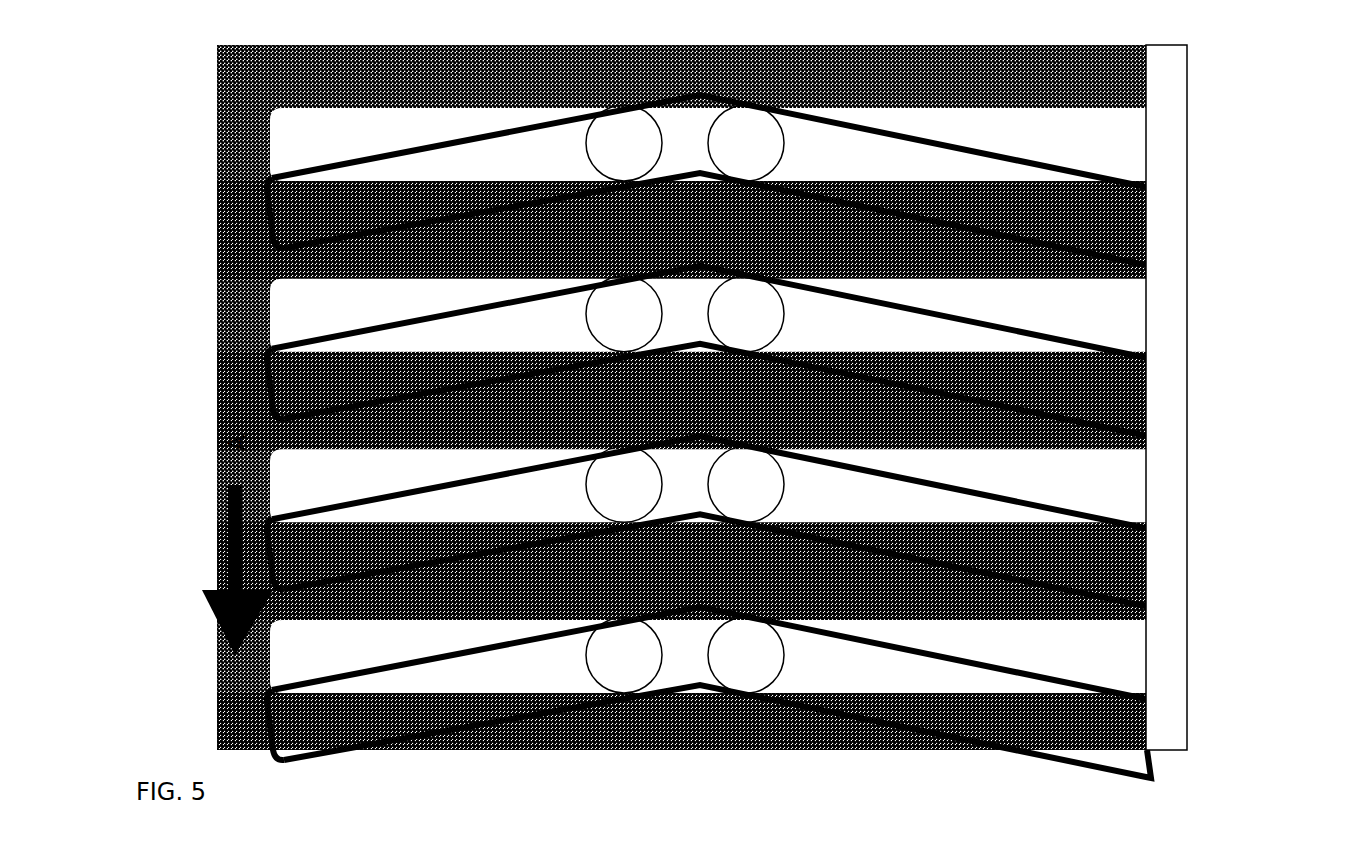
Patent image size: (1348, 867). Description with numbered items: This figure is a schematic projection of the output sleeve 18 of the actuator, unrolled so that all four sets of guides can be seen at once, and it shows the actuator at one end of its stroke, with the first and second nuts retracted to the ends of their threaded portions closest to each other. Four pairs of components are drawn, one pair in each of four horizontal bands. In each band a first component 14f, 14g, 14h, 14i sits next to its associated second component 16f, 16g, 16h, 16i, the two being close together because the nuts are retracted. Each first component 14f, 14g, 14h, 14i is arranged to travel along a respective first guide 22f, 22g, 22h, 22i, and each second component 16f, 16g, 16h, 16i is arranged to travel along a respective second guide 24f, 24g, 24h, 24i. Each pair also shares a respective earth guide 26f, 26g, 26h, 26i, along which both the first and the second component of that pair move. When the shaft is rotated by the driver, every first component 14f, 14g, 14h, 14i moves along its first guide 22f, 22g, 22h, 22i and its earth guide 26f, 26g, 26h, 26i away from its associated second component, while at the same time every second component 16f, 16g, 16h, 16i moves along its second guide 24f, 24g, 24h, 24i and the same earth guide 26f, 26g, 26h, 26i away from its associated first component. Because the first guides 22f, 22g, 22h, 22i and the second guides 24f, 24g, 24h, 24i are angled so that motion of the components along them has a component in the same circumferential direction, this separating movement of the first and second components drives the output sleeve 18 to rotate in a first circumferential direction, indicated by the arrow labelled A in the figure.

The output sleeve 18 is at (218, 320).
The first component 14f is at (582, 145).
The first component 14g is at (583, 318).
The first component 14h is at (583, 490).
The first component 14i is at (610, 672).
The second component 16f is at (785, 140).
The second component 16g is at (788, 318).
The second component 16h is at (785, 473).
The second component 16i is at (780, 647).
The first guide 22f is at (268, 178).
The first guide 22g is at (268, 348).
The first guide 22h is at (270, 518).
The first guide 22i is at (268, 690).
The second guide 24f is at (1132, 238).
The second guide 24g is at (1147, 387).
The second guide 24h is at (1148, 555).
The second guide 24i is at (1158, 737).
The earth guide 26f is at (1070, 145).
The earth guide 26g is at (1128, 313).
The earth guide 26h is at (1128, 495).
The earth guide 26i is at (1138, 652).